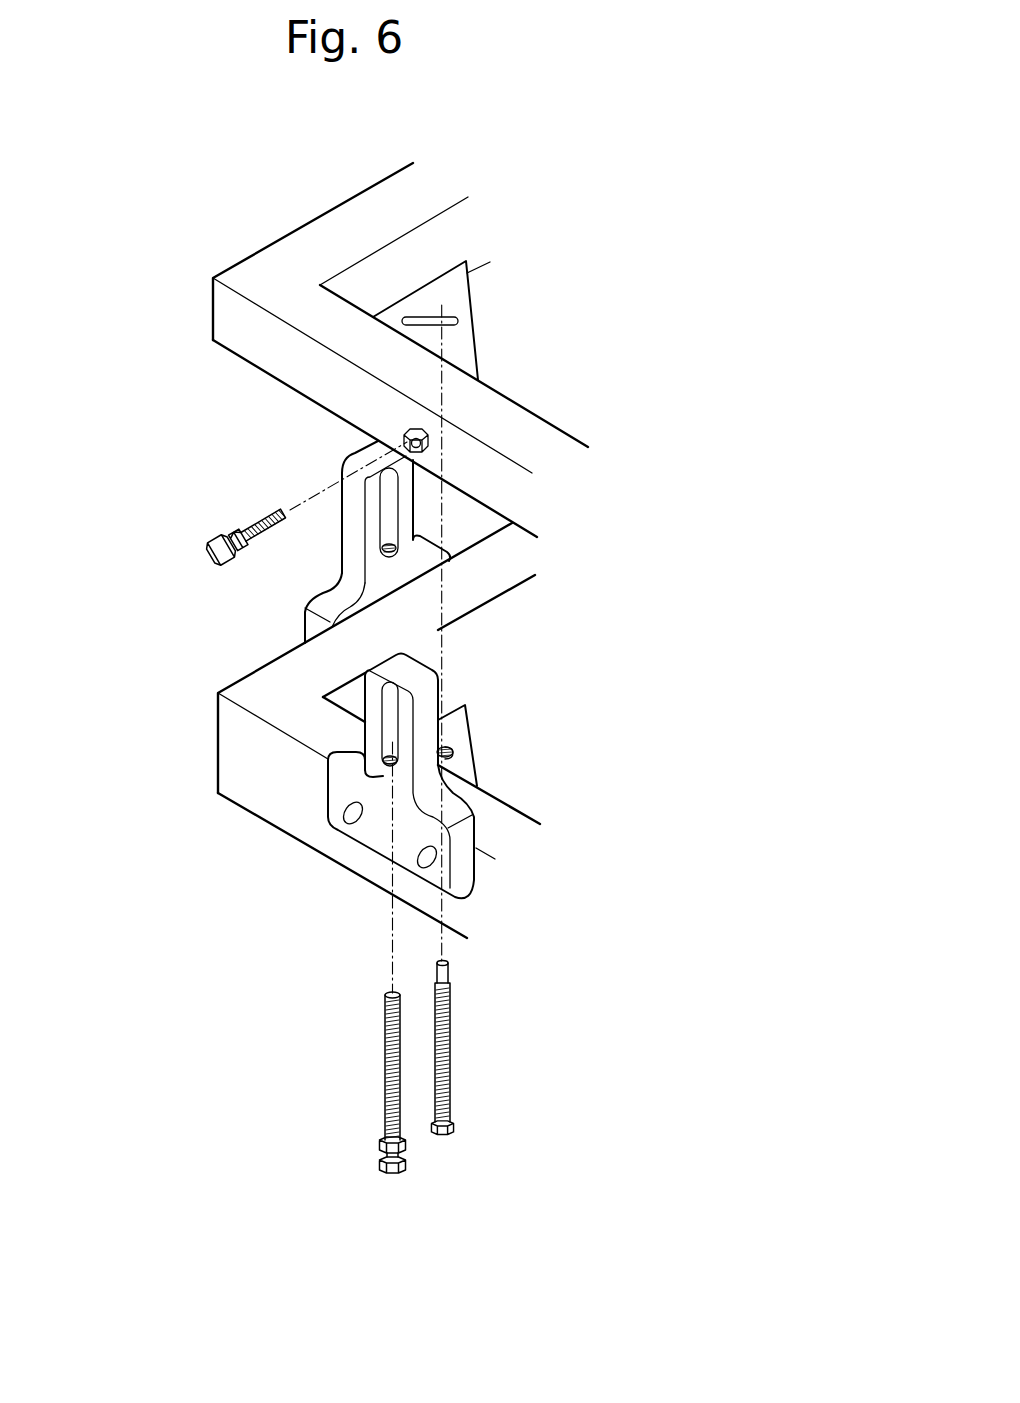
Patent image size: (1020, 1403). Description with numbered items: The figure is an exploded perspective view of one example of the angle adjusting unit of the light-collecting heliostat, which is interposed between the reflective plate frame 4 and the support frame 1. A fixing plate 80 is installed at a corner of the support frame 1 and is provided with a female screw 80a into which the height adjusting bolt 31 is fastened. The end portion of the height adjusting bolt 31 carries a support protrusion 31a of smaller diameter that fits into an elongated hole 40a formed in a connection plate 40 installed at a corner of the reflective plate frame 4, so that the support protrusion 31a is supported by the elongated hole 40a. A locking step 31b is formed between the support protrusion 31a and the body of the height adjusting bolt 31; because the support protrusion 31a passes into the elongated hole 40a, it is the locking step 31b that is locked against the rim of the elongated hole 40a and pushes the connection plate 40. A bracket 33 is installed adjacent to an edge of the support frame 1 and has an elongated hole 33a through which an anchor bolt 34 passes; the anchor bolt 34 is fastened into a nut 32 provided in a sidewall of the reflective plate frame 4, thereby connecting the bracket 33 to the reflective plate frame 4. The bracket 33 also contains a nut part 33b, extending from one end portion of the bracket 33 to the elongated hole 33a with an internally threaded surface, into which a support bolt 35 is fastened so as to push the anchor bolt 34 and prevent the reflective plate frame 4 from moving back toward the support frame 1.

The support frame 1 is at (230, 749).
The reflective plate frame 4 is at (230, 316).
The height adjusting bolt 31 is at (446, 1038).
The support protrusion 31a is at (447, 970).
The locking step 31b is at (440, 975).
The nut 32 is at (400, 443).
The bracket 33 is at (476, 858).
The elongated hole 33a is at (388, 758).
The nut part 33b is at (388, 757).
The anchor bolt 34 is at (246, 521).
The support bolt 35 is at (385, 1060).
The connection plate 40 is at (468, 357).
The elongated hole 40a is at (443, 316).
The fixing plate 80 is at (478, 768).
The female screw 80a is at (444, 745).